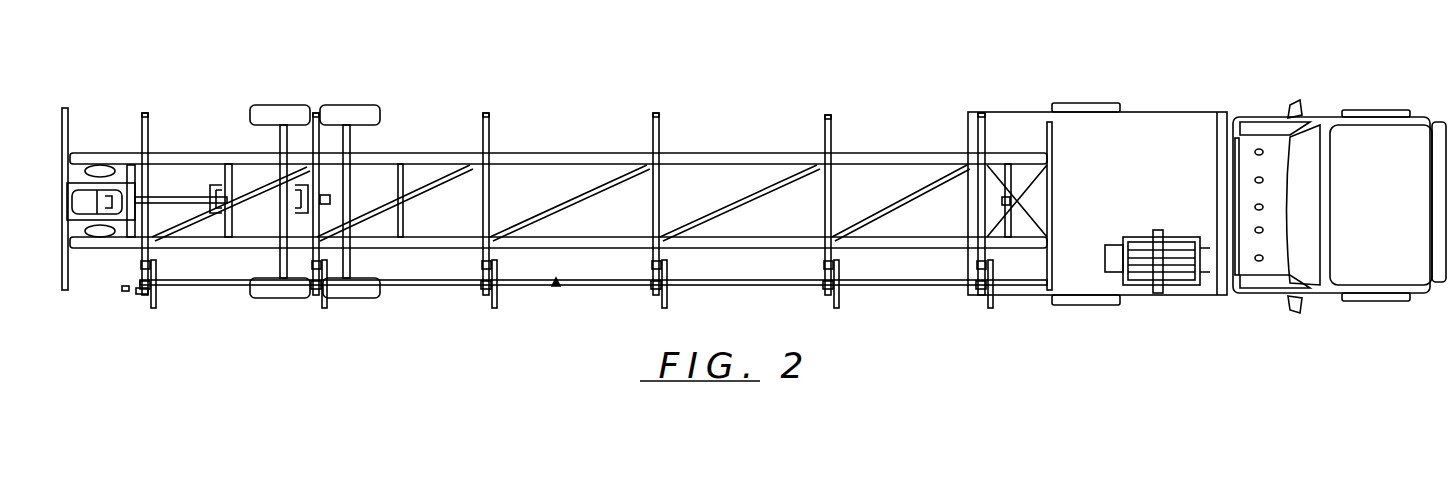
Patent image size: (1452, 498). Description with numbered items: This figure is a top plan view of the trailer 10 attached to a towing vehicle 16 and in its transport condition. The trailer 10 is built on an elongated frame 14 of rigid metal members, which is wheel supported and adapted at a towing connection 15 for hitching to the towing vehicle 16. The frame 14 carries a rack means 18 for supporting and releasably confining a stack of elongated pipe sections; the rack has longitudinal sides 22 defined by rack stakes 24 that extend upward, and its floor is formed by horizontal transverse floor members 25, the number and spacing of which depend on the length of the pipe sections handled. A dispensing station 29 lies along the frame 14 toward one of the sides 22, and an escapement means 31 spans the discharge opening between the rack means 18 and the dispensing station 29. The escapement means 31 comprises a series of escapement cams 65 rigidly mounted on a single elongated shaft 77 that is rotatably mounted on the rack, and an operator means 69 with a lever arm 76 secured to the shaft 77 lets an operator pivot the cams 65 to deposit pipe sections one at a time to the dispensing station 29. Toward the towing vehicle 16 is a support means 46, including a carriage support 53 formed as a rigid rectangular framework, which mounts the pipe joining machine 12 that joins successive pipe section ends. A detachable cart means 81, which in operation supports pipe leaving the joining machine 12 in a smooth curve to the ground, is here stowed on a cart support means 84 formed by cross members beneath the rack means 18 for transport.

The trailer 10 is at (603, 332).
The pipe joining machine 12 is at (1165, 296).
The elongated frame 14 is at (518, 153).
The towing connection 15 is at (1006, 204).
The towing vehicle 16 is at (1245, 296).
The rack means 18 is at (506, 98).
The longitudinal sides 22 is at (755, 158).
The rack stakes 24 is at (148, 113).
The horizontal transverse floor members 25 is at (655, 200).
The dispensing station 29 is at (554, 288).
The escapement means 31 is at (168, 320).
The support means 46 is at (1144, 220).
The carriage support 53 is at (1115, 242).
The escapement cams 65 is at (140, 265).
The operator means 69 is at (144, 322).
The lever arm 76 is at (122, 291).
The shaft 77 is at (883, 288).
The detachable cart means 81 is at (182, 186).
The cart support means 84 is at (283, 215).